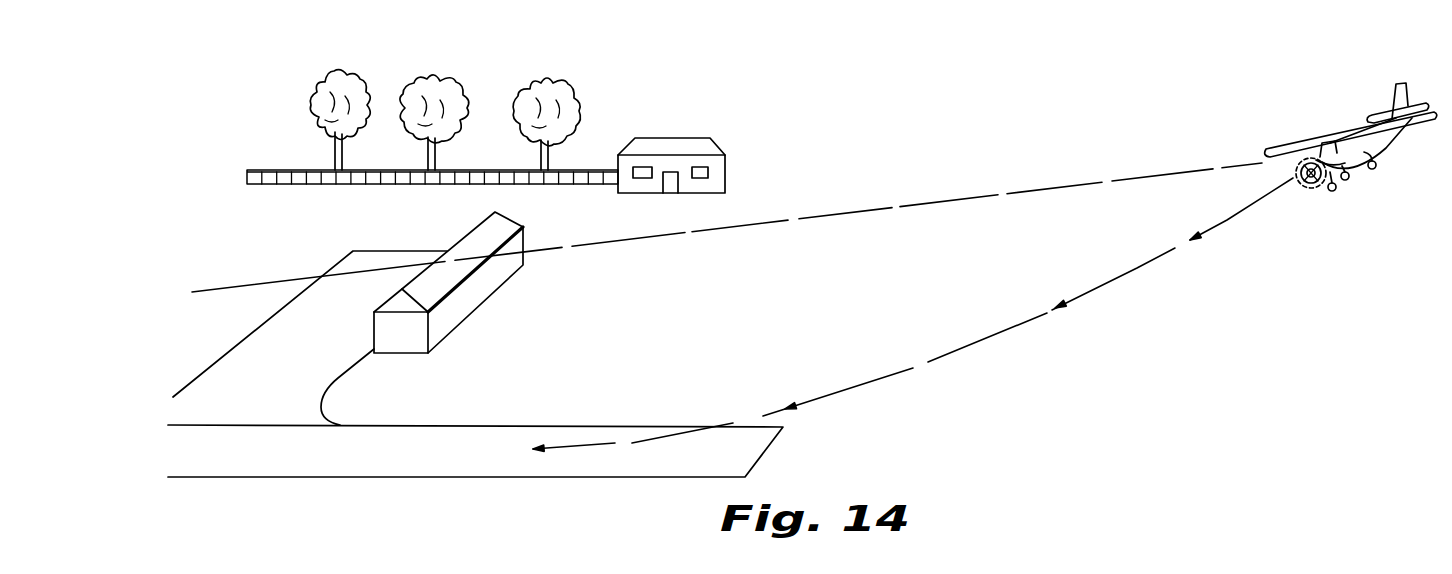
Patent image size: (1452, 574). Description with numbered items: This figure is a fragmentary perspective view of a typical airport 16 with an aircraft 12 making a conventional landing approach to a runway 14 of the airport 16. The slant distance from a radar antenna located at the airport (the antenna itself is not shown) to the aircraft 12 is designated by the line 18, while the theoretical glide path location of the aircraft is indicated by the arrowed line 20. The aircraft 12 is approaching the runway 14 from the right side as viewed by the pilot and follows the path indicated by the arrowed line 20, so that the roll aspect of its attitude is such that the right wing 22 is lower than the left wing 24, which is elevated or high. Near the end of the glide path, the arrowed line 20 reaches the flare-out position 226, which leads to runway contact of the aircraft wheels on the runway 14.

The aircraft 12 is at (1353, 137).
The runway 14 is at (484, 426).
The airport 16 is at (766, 177).
The slant distance 18 is at (926, 188).
The arrowed line 20 is at (1141, 267).
The right wing 22 is at (1302, 146).
The left wing 24 is at (1413, 127).
The flare-out position 226 is at (672, 434).